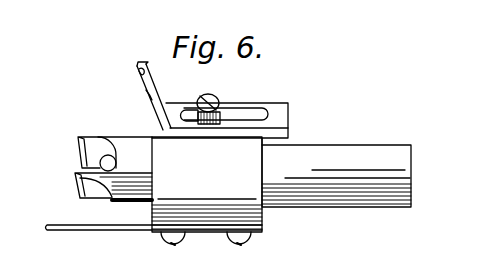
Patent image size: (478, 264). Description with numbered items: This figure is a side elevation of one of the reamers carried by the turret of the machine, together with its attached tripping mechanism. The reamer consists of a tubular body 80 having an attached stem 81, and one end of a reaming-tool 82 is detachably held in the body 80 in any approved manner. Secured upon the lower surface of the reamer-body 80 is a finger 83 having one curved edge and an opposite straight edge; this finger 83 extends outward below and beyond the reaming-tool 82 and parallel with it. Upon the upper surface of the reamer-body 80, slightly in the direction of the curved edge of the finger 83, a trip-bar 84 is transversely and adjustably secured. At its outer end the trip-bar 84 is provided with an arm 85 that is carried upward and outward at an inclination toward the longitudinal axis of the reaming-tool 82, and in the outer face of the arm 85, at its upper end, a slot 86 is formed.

The tubular body 80 is at (207, 191).
The stem 81 is at (336, 176).
The reaming-tool 82 is at (113, 168).
The finger 83 is at (102, 227).
The trip-bar 84 is at (288, 116).
The arm 85 is at (153, 104).
The slot 86 is at (139, 74).